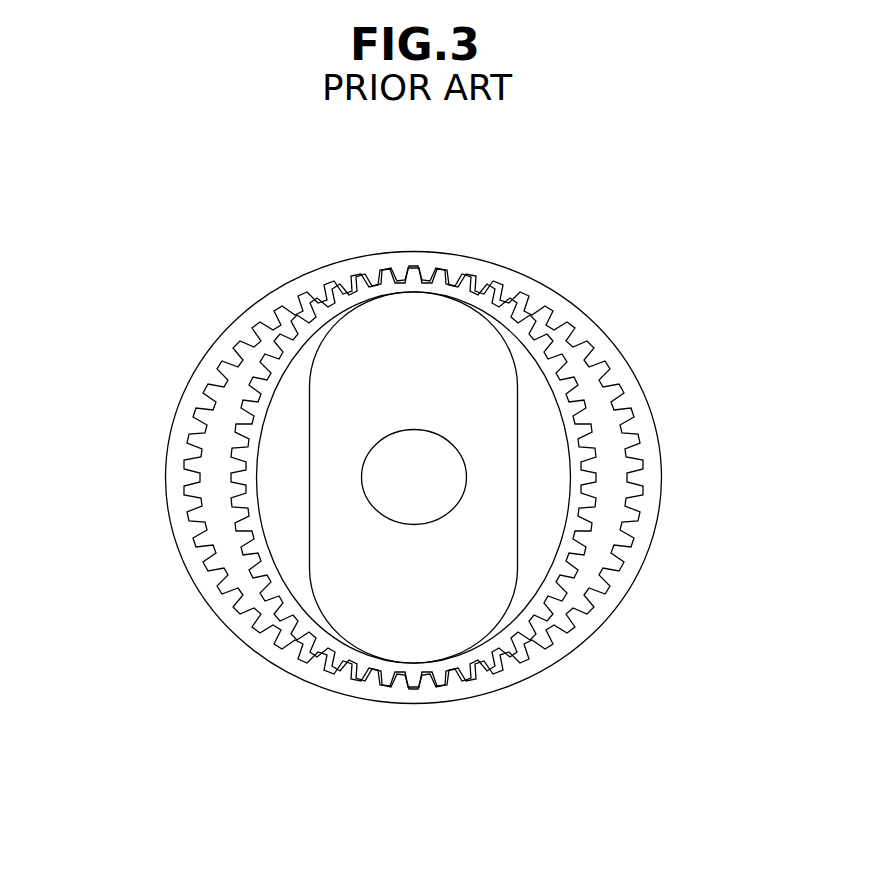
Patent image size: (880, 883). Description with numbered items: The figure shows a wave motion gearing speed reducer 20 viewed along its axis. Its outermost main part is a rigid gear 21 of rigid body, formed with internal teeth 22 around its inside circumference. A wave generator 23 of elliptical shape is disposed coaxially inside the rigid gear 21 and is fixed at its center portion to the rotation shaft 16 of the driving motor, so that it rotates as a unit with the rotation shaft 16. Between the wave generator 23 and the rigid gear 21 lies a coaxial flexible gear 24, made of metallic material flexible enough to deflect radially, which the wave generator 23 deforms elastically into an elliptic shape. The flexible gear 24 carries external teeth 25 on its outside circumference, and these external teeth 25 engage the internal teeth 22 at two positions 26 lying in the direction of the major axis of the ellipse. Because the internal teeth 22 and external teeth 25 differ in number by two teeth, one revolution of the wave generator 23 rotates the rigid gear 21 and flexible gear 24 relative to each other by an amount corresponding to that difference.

The rotation shaft 16 is at (405, 497).
The wave motion gearing speed reducer 20 is at (475, 472).
The rigid gear 21 is at (164, 388).
The internal teeth 22 is at (217, 390).
The wave generator 23 is at (452, 337).
The flexible gear 24 is at (607, 456).
The external teeth 25 is at (573, 356).
The two positions 26 is at (412, 290).